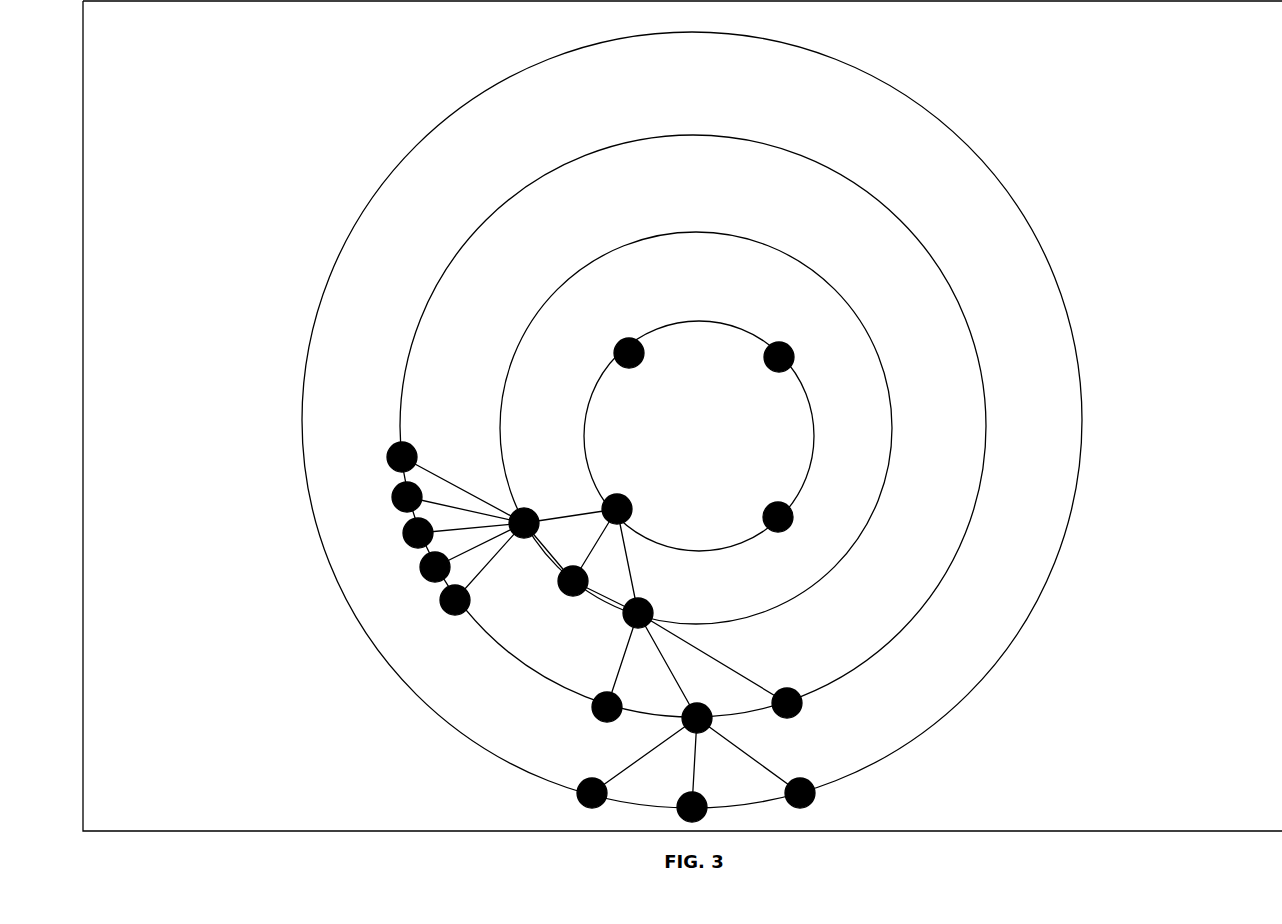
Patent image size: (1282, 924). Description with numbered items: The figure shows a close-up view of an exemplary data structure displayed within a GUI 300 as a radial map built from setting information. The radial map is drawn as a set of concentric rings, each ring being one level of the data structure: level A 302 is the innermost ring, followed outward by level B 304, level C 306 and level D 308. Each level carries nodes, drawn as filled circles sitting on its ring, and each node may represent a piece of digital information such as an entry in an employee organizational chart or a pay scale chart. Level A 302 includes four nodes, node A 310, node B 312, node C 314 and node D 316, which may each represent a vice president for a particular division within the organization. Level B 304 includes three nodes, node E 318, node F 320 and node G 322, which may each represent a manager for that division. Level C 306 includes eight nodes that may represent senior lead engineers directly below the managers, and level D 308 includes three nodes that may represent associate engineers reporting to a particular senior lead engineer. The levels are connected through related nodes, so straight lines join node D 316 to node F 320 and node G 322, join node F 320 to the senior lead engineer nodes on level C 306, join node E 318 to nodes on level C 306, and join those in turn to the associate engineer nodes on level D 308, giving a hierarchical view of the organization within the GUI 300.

The GUI 300 is at (1259, 25).
The level A 302 is at (813, 386).
The level B 304 is at (887, 381).
The level C 306 is at (980, 351).
The level D 308 is at (1080, 342).
The node A 310 is at (791, 513).
The node B 312 is at (791, 346).
The node C 314 is at (614, 351).
The node D 316 is at (629, 500).
The node E 318 is at (650, 603).
The node F 320 is at (537, 510).
The node G 322 is at (565, 593).